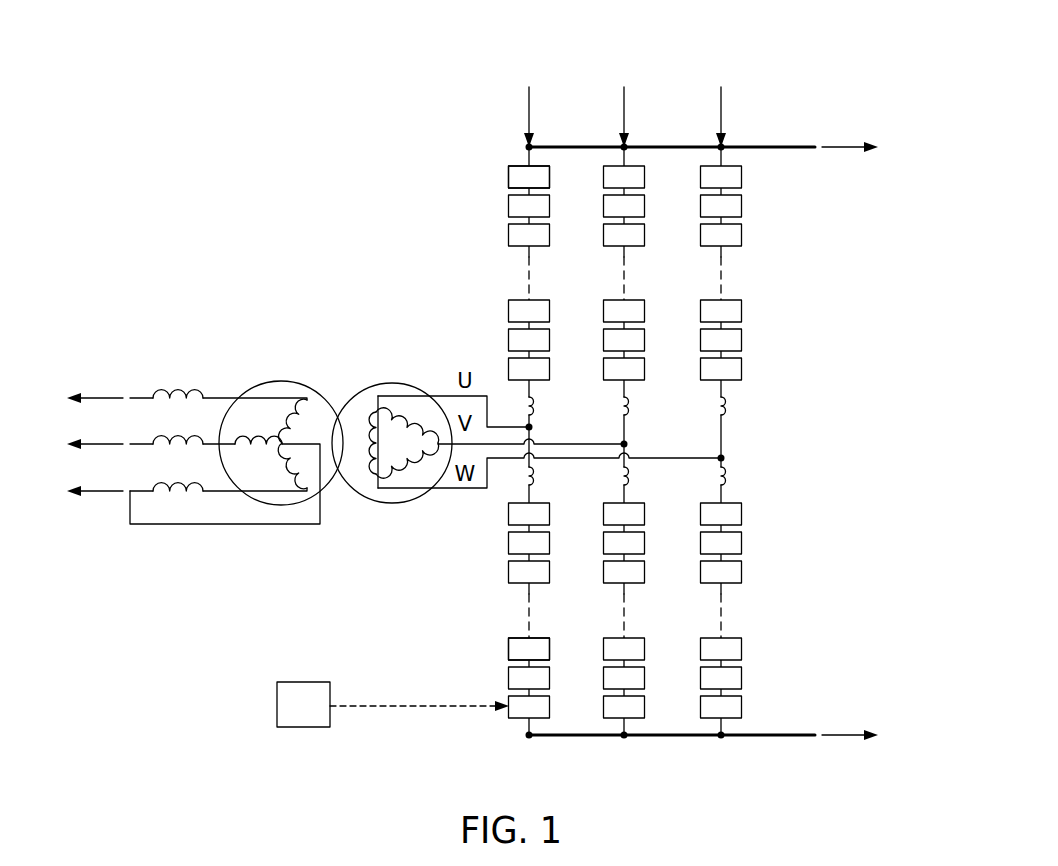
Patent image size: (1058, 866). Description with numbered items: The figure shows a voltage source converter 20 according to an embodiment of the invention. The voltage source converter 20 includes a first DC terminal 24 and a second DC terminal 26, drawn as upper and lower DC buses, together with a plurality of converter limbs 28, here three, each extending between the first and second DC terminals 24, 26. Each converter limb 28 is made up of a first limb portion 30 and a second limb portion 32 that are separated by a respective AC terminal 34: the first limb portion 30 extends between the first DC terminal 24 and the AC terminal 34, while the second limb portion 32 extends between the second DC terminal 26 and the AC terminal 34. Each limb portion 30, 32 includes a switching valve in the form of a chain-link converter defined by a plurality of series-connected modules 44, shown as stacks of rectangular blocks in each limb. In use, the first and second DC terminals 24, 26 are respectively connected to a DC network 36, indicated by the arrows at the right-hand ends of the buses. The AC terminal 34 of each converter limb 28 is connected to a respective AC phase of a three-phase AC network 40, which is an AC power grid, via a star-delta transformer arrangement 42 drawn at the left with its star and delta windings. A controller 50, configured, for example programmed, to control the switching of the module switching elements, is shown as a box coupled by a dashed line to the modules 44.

The voltage source converter 20 is at (645, 400).
The first DC terminal 24 is at (722, 146).
The second DC terminal 26 is at (724, 738).
The converter limb 28 is at (625, 101).
The first limb portion 30 is at (752, 276).
The second limb portion 32 is at (764, 571).
The AC terminal 34 is at (533, 427).
The DC network 36 is at (867, 442).
The three-phase AC network 40 is at (119, 439).
The star-delta transformer arrangement 42 is at (339, 511).
The series-connected module 44 is at (509, 166).
The controller 50 is at (290, 716).